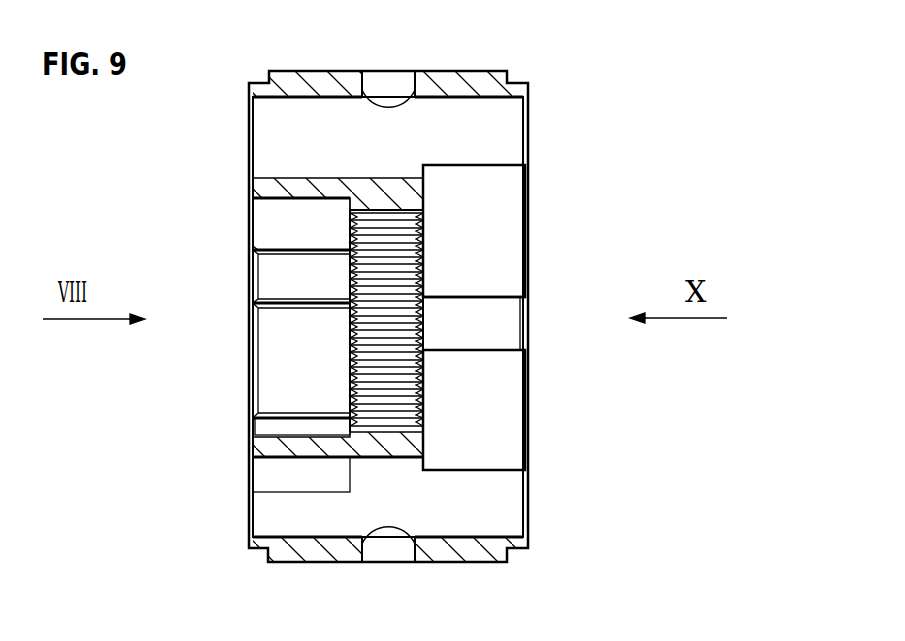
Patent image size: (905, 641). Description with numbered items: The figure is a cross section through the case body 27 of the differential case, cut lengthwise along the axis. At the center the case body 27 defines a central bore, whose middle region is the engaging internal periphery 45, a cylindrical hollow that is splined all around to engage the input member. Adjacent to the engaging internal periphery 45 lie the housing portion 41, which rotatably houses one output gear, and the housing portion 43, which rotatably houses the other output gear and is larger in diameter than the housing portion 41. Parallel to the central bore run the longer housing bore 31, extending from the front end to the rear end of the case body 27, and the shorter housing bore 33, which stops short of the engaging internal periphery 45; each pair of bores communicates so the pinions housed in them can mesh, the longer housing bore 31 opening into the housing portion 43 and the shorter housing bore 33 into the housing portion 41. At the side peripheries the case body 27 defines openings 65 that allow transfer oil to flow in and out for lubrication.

The case body 27 is at (570, 104).
The longer housing bore 31 is at (388, 155).
The shorter housing bore 33 is at (272, 477).
The housing portion 41 is at (308, 370).
The housing portion 43 is at (490, 416).
The engaging internal periphery 45 is at (431, 244).
The opening 65 is at (365, 95).